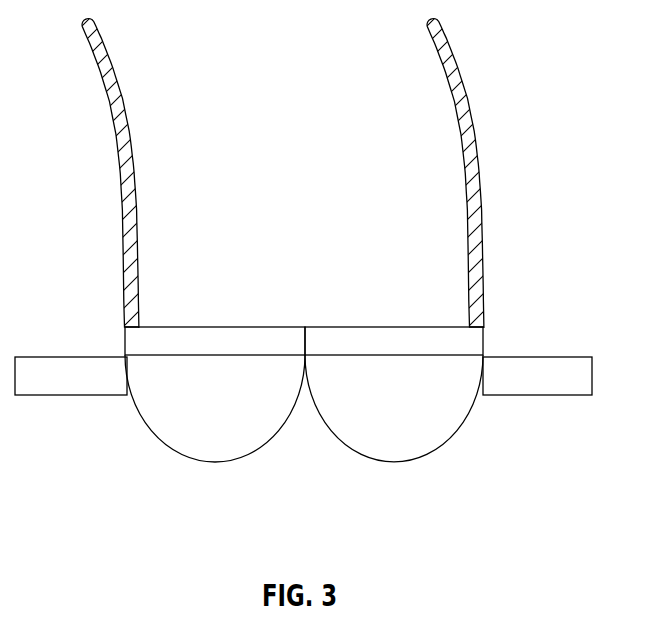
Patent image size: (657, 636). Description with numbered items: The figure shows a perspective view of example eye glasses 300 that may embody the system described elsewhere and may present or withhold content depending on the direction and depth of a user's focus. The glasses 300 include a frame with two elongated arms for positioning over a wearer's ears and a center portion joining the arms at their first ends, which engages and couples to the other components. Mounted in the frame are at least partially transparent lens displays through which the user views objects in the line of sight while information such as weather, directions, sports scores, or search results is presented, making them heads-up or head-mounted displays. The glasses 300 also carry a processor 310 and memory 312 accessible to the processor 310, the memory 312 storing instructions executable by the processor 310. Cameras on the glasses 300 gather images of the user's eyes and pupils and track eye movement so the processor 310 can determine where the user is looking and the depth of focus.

The eye glasses 300 is at (333, 233).
The processor 310 is at (248, 327).
The memory 312 is at (415, 327).